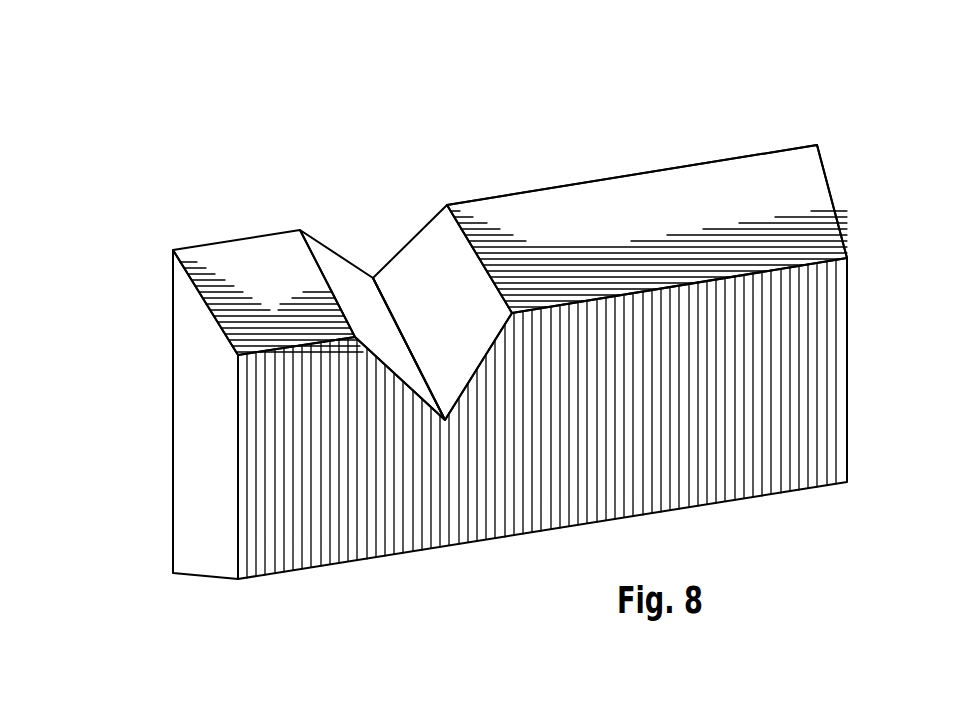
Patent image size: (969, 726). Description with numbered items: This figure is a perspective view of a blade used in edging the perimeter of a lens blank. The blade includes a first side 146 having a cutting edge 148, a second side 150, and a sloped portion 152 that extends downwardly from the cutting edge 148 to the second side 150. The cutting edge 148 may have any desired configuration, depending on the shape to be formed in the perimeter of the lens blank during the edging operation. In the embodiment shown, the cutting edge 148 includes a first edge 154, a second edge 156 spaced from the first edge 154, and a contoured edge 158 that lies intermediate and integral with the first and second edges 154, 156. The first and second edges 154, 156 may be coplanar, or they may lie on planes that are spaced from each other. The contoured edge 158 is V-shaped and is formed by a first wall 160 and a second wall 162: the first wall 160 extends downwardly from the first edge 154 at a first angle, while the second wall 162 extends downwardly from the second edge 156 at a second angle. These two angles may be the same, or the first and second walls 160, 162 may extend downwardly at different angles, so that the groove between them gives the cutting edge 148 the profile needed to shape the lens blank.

The first side 146 is at (164, 452).
The cutting edge 148 is at (571, 163).
The second side 150 is at (807, 368).
The sloped portion 152 is at (773, 197).
The first edge 154 is at (210, 230).
The second edge 156 is at (662, 157).
The contoured edge 158 is at (370, 200).
The first wall 160 is at (337, 234).
The second wall 162 is at (414, 222).